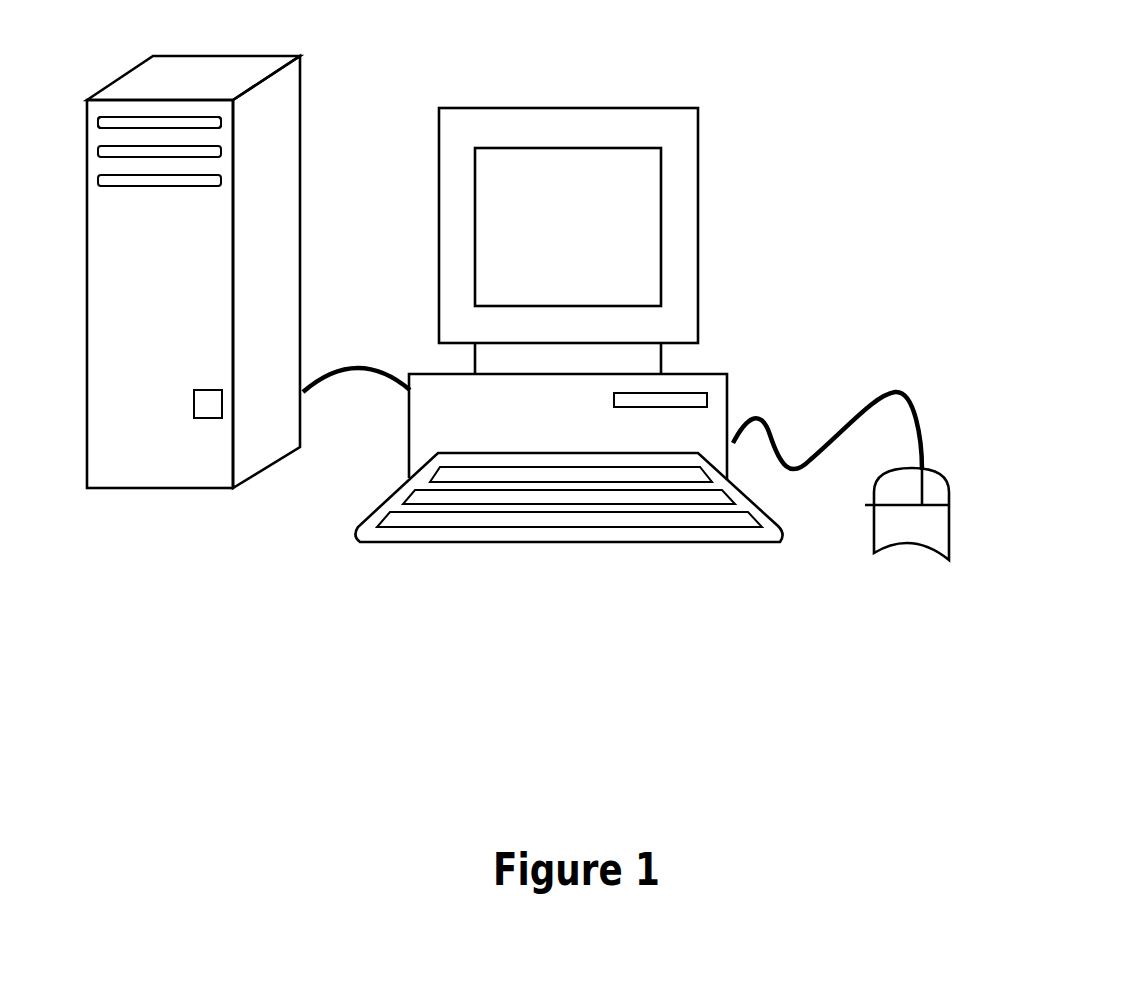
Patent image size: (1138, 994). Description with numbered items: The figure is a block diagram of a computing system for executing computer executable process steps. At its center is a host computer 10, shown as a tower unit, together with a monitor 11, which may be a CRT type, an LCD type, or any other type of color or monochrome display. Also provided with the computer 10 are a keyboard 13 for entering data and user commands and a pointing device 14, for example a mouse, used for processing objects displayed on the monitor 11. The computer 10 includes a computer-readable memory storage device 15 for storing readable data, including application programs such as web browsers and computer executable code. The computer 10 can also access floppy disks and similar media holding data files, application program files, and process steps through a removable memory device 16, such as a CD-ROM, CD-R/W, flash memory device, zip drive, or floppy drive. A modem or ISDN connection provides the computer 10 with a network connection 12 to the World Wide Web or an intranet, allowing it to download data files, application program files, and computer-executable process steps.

The host computer 10 is at (698, 133).
The monitor 11 is at (633, 253).
The network connection 12 is at (194, 470).
The keyboard 13 is at (630, 543).
The pointing device 14 is at (922, 527).
The computer-readable memory storage device 15 is at (195, 137).
The removable memory device 16 is at (141, 193).